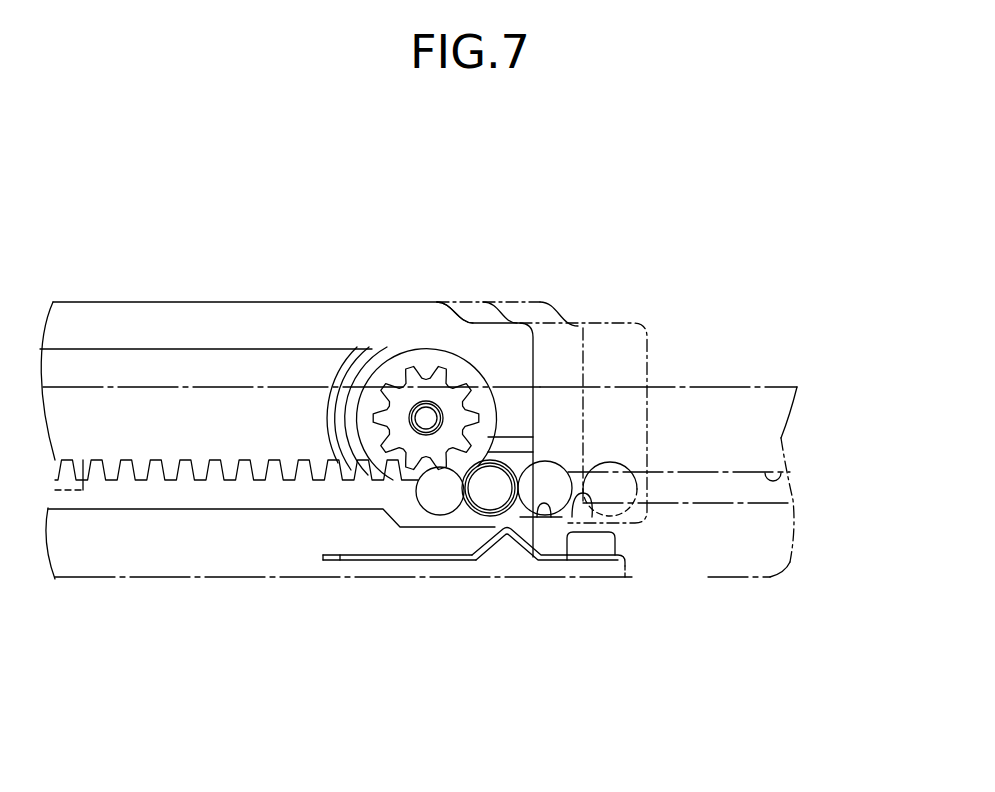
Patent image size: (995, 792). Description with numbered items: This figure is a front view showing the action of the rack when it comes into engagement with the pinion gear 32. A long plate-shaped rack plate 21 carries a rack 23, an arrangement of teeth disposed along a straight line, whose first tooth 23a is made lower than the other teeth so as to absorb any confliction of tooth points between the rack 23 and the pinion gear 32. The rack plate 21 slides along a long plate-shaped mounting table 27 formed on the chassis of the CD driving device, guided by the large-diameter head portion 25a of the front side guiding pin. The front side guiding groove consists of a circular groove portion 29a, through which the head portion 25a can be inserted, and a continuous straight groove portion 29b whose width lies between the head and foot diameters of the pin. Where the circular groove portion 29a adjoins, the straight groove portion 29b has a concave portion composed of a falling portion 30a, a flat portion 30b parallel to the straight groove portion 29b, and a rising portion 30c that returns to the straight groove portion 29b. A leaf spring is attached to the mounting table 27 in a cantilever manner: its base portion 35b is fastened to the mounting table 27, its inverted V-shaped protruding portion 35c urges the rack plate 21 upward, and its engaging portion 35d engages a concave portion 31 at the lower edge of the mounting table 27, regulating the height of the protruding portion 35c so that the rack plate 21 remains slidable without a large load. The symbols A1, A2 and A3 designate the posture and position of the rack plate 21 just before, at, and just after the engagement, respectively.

The rack plate 21 is at (156, 313).
The rack 23 is at (212, 460).
The first tooth 23a is at (353, 350).
The pinion gear 32 is at (403, 360).
The posture and position just before engagement A1 is at (457, 312).
The posture and position at engagement A2 is at (510, 318).
The posture and position just after engagement A3 is at (577, 325).
The head portion 25a is at (528, 478).
The mounting table 27 is at (732, 397).
The circular groove portion 29a is at (437, 514).
The straight groove portion 29b is at (778, 483).
The falling portion 30a is at (520, 514).
The flat portion 30b is at (543, 514).
The rising portion 30c is at (600, 497).
The concave portion 31 is at (567, 561).
The base portion 35b is at (355, 561).
The protruding portion 35c is at (500, 534).
The engaging portion 35d is at (592, 562).